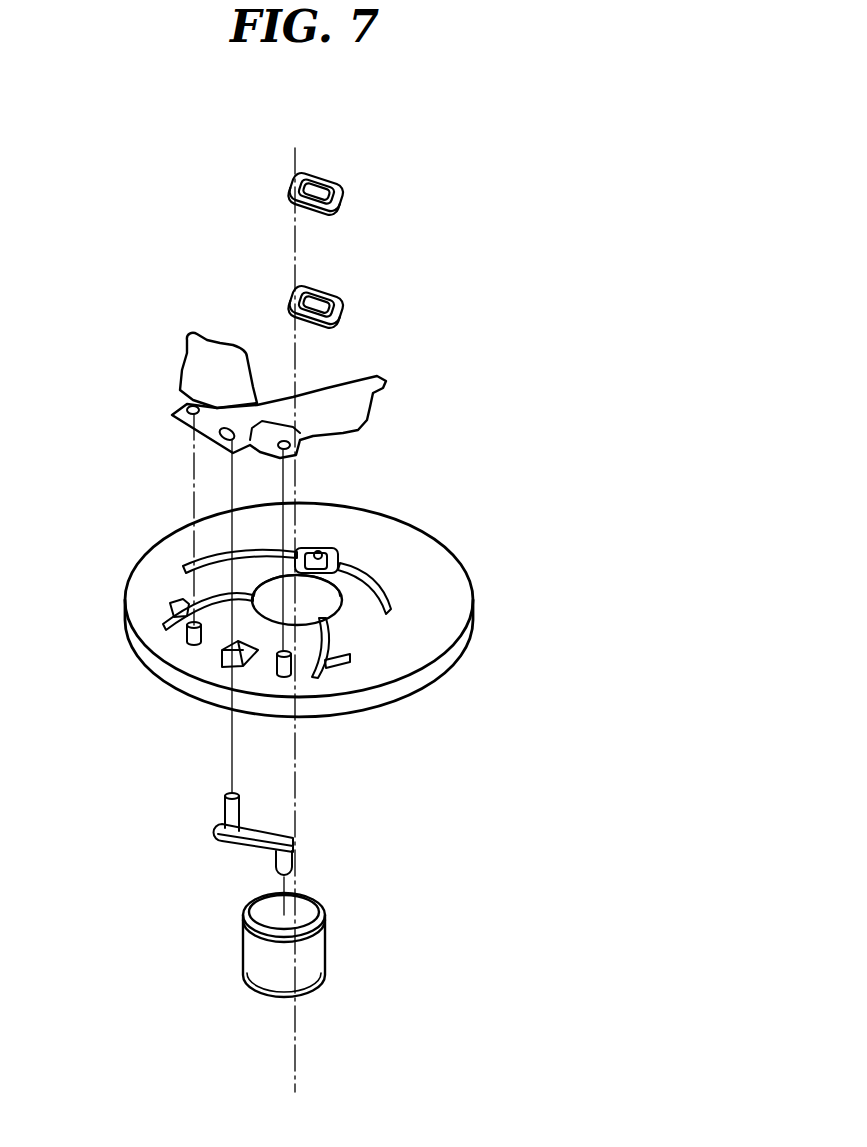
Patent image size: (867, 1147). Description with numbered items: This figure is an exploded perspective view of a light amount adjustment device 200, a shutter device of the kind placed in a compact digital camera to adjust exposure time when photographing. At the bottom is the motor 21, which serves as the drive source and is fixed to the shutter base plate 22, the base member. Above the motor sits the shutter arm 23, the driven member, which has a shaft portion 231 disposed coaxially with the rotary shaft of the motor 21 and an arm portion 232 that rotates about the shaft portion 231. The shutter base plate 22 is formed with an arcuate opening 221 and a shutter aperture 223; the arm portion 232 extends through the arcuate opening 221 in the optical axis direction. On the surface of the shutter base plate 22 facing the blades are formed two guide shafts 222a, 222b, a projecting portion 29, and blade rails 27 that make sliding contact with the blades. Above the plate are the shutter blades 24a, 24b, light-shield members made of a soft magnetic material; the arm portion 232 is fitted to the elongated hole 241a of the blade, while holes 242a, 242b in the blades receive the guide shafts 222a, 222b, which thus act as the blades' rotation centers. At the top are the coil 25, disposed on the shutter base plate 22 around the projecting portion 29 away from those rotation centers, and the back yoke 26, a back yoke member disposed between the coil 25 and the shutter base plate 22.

The light amount adjustment device 200 is at (540, 147).
The coil 25 is at (345, 183).
The back yoke 26 is at (344, 297).
The shutter blade 24a is at (360, 405).
The shutter blade 24b is at (233, 362).
The hole 242a is at (187, 403).
The elongated hole 241a is at (207, 427).
The hole 242b is at (293, 448).
The shutter base plate 22 is at (460, 648).
The shutter aperture 223 is at (340, 591).
The blade rails 27 is at (357, 570).
The projecting portion 29 is at (320, 552).
The guide shaft 222a is at (186, 643).
The guide shaft 222b is at (284, 675).
The arcuate opening 221 is at (235, 641).
The shutter arm 23 is at (278, 823).
The arm portion 232 is at (240, 795).
The shaft portion 231 is at (288, 863).
The motor 21 is at (306, 959).